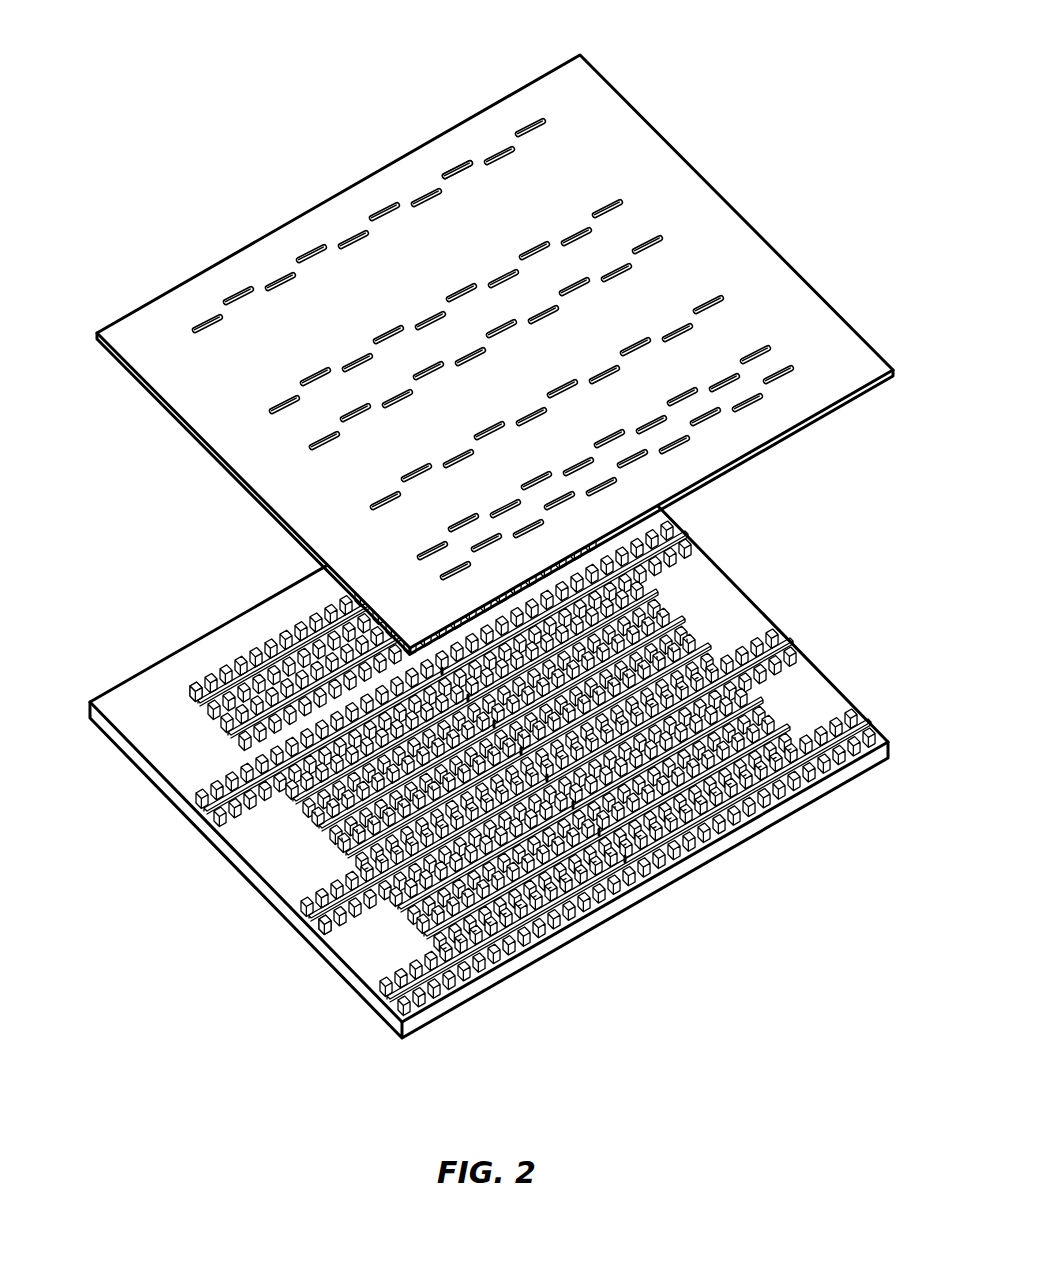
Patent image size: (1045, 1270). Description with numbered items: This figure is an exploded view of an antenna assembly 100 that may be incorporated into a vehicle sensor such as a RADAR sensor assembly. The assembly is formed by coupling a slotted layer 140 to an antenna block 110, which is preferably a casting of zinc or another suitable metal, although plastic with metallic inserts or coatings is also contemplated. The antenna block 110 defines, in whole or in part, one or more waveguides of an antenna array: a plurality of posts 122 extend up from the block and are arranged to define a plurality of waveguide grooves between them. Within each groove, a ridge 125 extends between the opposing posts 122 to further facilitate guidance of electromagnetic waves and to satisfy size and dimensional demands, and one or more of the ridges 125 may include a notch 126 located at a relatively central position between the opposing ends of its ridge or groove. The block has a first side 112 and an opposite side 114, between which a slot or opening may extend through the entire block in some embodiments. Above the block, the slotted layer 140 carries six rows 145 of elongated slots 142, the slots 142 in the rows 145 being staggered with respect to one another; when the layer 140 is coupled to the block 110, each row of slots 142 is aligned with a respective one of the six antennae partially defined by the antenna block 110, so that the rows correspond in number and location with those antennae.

The antenna assembly 100 is at (487, 529).
The antenna block 110 is at (490, 730).
The first side 112 is at (830, 695).
The opposite side 114 is at (770, 828).
The post 122 is at (186, 698).
The ridge 125 is at (268, 776).
The notch 126 is at (632, 858).
The slotted layer 140 is at (502, 337).
The slot 142 is at (463, 165).
The row of slots 145 is at (492, 300).